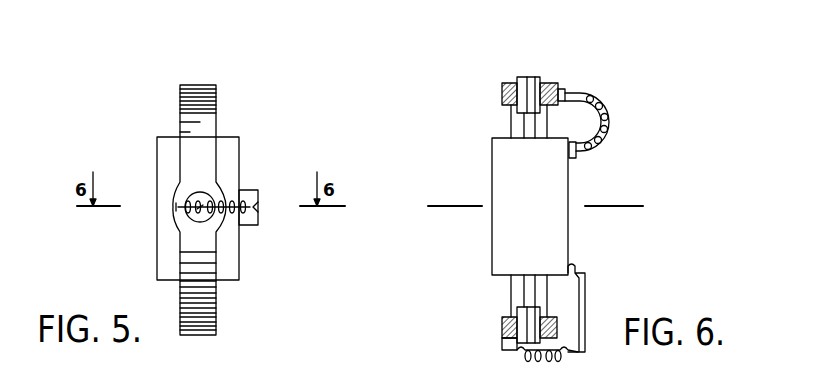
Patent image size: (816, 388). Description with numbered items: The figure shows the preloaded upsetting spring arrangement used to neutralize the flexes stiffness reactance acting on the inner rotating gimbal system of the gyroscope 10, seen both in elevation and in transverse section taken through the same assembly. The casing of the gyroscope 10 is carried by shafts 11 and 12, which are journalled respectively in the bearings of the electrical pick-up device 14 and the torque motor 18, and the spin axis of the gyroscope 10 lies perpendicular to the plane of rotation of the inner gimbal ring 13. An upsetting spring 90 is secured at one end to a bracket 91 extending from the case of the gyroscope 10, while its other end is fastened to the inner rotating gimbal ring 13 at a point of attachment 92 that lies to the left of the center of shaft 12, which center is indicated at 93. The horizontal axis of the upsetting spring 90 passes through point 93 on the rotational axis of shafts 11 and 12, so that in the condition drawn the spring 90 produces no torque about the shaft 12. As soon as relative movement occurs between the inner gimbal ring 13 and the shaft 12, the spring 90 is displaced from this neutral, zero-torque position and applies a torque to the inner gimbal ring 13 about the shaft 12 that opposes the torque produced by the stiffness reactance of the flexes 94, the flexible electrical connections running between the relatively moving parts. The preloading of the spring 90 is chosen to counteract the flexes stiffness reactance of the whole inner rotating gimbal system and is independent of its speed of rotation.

In FIG. 5, the gyroscope 10 is at (240, 148).
In FIG. 6, the gyroscope 10 is at (492, 173).
In FIG. 6, the shaft 11 is at (525, 122).
In FIG. 6, the shaft 12 is at (524, 288).
In FIG. 5, the inner gimbal ring 13 is at (217, 96).
In FIG. 6, the inner gimbal ring 13 is at (553, 84).
In FIG. 6, the electrical pick-up device 14 is at (527, 90).
In FIG. 5, the torque motor 18 is at (215, 195).
In FIG. 6, the torque motor 18 is at (518, 350).
In FIG. 5, the upsetting spring 90 is at (252, 202).
In FIG. 6, the upsetting spring 90 is at (553, 360).
In FIG. 5, the bracket 91 is at (258, 224).
In FIG. 6, the bracket 91 is at (586, 291).
In FIG. 5, the point of attachment 92 is at (178, 205).
In FIG. 6, the point of attachment 92 is at (502, 347).
In FIG. 5, the center of shaft 93 is at (204, 204).
In FIG. 6, the flexes 94 is at (608, 112).